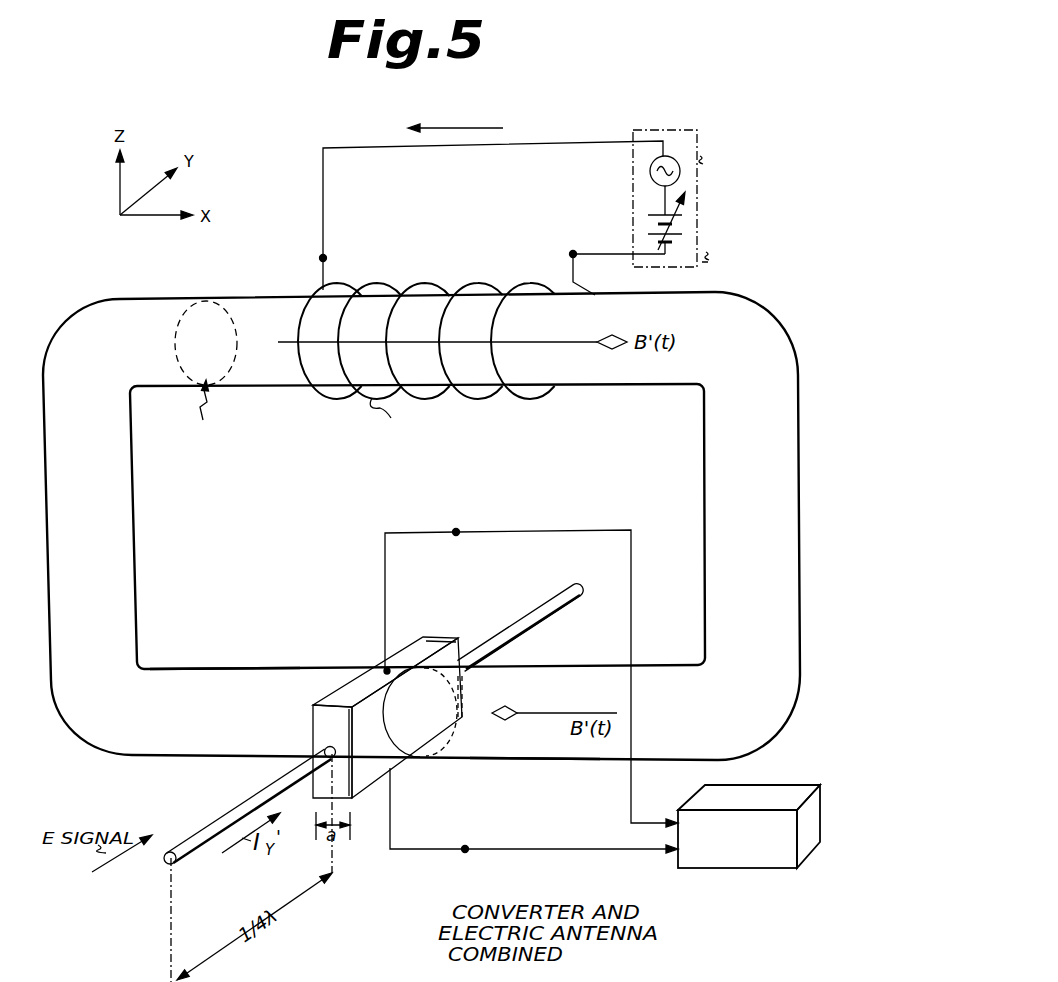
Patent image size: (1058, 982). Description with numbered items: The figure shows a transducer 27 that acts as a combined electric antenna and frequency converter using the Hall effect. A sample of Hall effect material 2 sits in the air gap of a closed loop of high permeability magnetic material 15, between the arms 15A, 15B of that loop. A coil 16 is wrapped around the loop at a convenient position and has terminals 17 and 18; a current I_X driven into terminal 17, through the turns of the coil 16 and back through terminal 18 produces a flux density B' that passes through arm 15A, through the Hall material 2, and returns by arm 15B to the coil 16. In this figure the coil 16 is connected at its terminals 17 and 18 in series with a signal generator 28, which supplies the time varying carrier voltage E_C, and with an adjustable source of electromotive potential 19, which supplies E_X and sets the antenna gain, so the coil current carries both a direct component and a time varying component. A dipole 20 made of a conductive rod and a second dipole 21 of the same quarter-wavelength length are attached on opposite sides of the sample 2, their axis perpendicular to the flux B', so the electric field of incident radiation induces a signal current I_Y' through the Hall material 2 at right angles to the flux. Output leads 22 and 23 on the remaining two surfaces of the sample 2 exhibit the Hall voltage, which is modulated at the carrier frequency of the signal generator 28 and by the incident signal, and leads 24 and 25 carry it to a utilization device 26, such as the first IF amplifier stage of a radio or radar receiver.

The sample of Hall effect material 2 is at (368, 683).
The closed loop of magnetic material 15 is at (127, 543).
The arm of the magnetic loop 15A is at (480, 752).
The arm of the magnetic loop 15B is at (290, 666).
The coil 16 is at (330, 397).
The terminal 17 is at (326, 258).
The terminal 18 is at (572, 253).
The adjustable source of electromotive potential 19 is at (688, 224).
The dipole 20 is at (227, 817).
The second dipole 21 is at (546, 603).
The output lead 22 is at (424, 522).
The output lead 23 is at (442, 852).
The lead 24 is at (567, 520).
The lead 25 is at (607, 852).
The utilization device 26 is at (753, 867).
The transducer 27 is at (287, 276).
The signal generator 28 is at (681, 171).